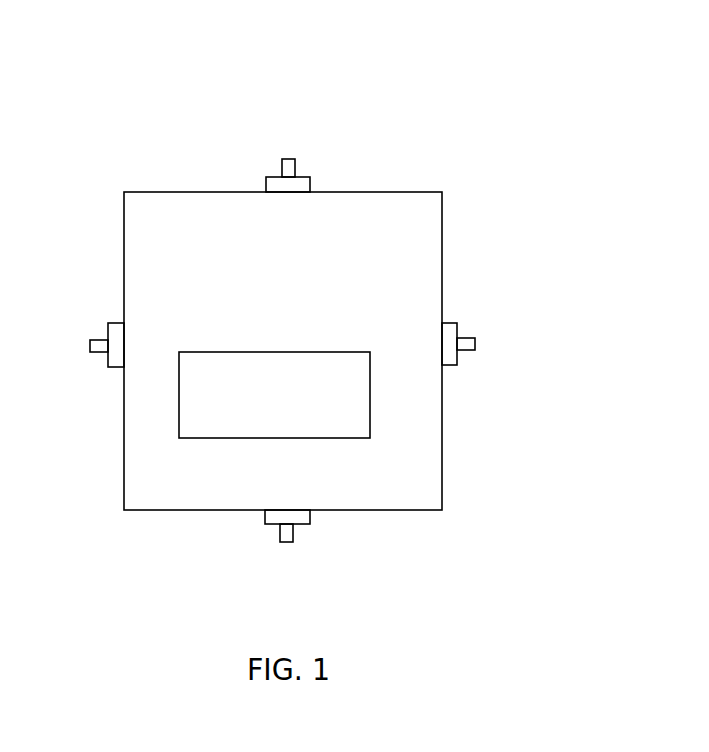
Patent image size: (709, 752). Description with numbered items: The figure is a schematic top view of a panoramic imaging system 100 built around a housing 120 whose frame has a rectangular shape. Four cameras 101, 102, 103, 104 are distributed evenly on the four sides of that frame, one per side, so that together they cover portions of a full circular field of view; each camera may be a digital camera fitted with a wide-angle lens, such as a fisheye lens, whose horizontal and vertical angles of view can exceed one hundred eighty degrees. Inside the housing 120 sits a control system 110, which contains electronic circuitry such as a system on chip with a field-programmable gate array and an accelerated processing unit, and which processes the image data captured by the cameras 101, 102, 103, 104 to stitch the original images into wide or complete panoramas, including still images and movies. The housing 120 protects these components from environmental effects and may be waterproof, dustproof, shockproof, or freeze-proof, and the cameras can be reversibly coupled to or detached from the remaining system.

The panoramic imaging system 100 is at (518, 158).
The housing 120 is at (442, 263).
The control system 110 is at (274, 395).
The camera 101 is at (288, 164).
The camera 102 is at (88, 345).
The camera 103 is at (287, 539).
The camera 104 is at (481, 344).